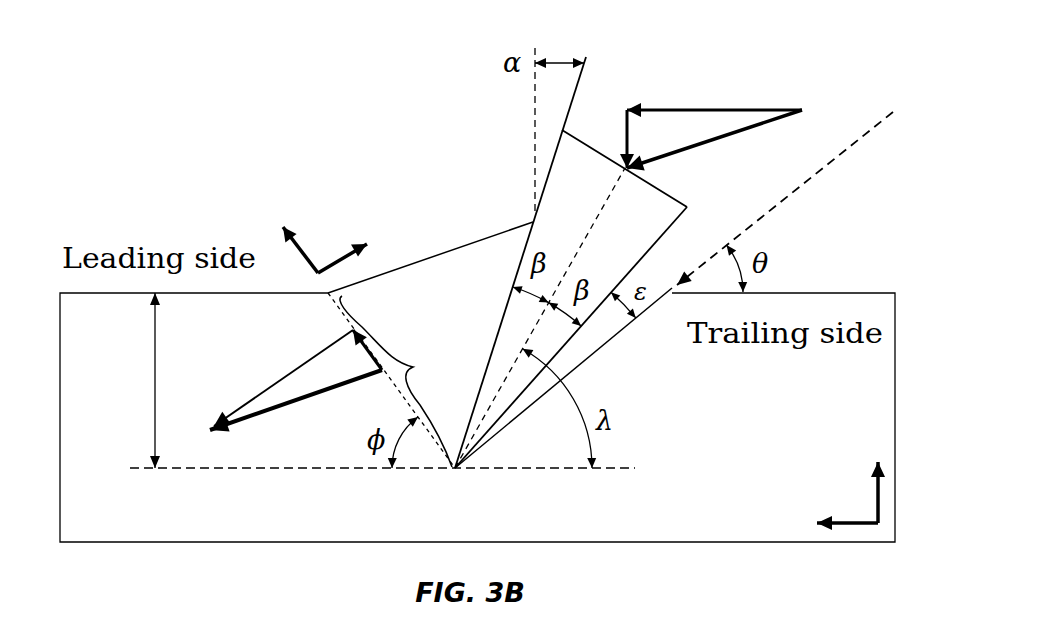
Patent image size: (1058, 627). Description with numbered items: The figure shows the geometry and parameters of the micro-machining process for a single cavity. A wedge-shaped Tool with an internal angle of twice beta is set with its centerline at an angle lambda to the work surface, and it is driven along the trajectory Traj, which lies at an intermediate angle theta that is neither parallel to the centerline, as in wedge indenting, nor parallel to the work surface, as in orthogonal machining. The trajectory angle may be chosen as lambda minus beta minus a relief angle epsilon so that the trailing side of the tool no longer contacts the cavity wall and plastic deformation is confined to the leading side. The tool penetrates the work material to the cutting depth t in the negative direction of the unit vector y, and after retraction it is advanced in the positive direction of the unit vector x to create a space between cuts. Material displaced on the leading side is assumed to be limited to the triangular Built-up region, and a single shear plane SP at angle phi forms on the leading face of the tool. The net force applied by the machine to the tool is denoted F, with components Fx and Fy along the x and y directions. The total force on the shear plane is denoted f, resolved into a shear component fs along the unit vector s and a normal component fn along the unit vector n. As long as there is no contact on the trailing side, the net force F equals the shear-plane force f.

The tool Tool is at (571, 262).
The built-up region Built-up is at (487, 260).
The shear plane SP is at (396, 381).
The net force F is at (714, 147).
The x component of net force Fx is at (714, 97).
The y component of net force Fy is at (610, 137).
The tool trajectory Traj is at (785, 198).
The shear plane normal unit vector n is at (355, 253).
The shear plane tangent unit vector s is at (300, 239).
The total force on the shear plane f is at (296, 403).
The shear component of shear plane force fs is at (355, 354).
The normal component of shear plane force fn is at (283, 378).
The x-direction unit vector x is at (845, 510).
The y-direction unit vector y is at (870, 481).
The cutting depth t is at (144, 380).